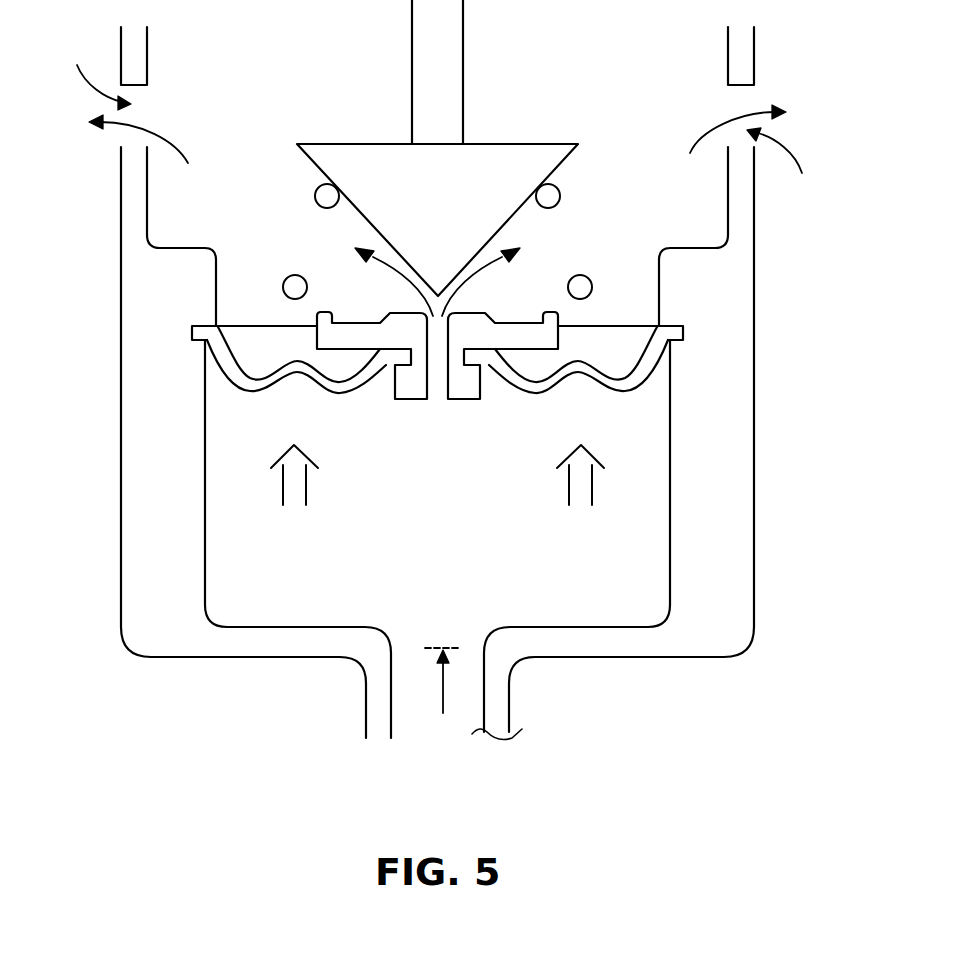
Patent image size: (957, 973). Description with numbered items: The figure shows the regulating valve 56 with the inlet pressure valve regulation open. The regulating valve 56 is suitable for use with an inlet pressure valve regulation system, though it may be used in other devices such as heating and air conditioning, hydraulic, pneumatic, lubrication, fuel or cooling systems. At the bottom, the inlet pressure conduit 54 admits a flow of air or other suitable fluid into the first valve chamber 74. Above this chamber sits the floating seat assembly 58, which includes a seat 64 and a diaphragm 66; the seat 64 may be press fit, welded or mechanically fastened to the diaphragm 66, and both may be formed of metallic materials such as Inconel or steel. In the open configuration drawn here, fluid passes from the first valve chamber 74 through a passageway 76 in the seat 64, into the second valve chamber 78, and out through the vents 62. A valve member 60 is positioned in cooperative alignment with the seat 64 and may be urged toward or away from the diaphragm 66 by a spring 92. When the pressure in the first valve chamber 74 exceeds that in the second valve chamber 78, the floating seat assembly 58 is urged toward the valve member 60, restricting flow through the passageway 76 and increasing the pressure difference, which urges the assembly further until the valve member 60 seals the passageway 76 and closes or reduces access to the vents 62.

The inlet pressure conduit 54 is at (365, 701).
The regulating valve 56 is at (769, 382).
The floating seat assembly 58 is at (277, 314).
The valve member 60 is at (528, 168).
The vents 62 is at (440, 120).
The seat 64 is at (482, 312).
The diaphragm 66 is at (585, 360).
The first valve chamber 74 is at (617, 561).
The passageway 76 is at (437, 387).
The second valve chamber 78 is at (650, 80).
The spring 92 is at (316, 196).